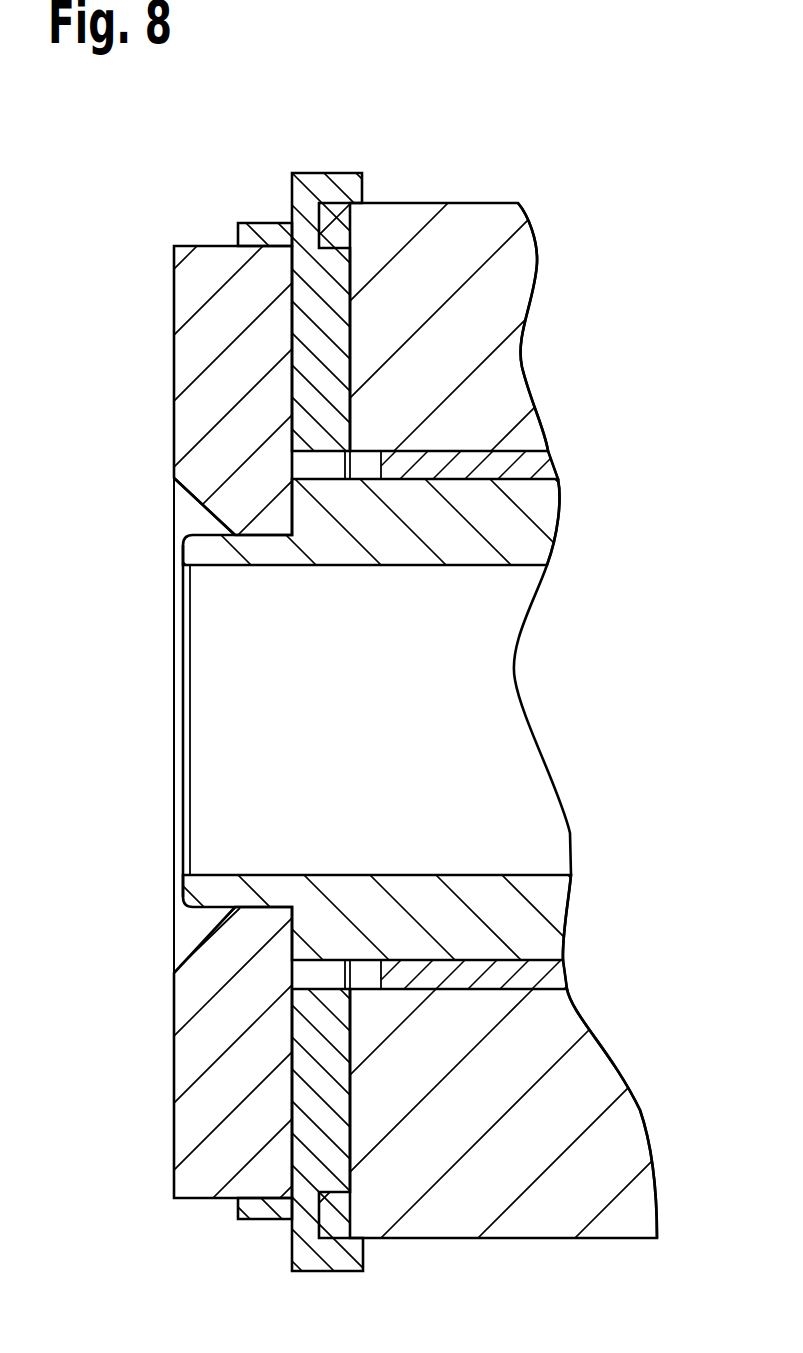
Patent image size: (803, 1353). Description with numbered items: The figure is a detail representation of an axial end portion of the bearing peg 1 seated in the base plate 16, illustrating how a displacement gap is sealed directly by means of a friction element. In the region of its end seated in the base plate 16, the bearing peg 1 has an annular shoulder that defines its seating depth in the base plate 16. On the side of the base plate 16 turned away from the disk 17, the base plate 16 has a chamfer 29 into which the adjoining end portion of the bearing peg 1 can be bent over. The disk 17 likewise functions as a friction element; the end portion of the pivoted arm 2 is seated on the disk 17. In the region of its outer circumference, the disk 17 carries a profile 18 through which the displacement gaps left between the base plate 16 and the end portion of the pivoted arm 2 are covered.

The bearing peg 1 is at (403, 930).
The pivoted arm 2 is at (478, 243).
The base plate 16 is at (237, 320).
The disk 17 is at (327, 379).
The profile 18 is at (242, 180).
The chamfer 29 is at (200, 503).